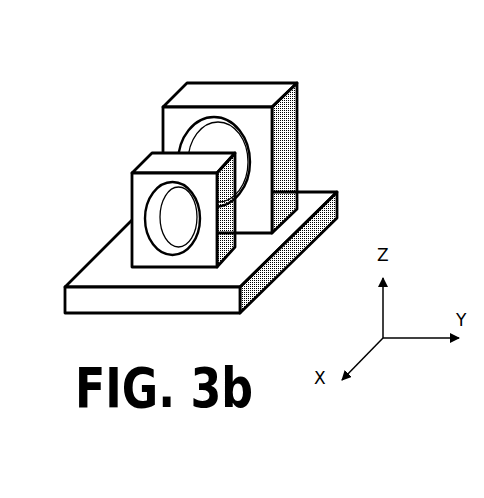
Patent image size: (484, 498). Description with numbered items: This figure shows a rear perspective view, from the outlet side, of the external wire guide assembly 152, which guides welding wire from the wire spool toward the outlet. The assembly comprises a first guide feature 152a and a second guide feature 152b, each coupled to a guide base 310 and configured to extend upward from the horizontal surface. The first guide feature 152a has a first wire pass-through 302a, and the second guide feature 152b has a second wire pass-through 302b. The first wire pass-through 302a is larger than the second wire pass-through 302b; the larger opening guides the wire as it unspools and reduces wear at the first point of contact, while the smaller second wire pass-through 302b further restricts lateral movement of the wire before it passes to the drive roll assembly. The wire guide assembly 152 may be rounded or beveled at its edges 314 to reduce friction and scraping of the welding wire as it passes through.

The wire guide assembly 152 is at (228, 136).
The first guide feature 152a is at (267, 82).
The second guide feature 152b is at (133, 172).
The first wire pass-through 302a is at (247, 160).
The second wire pass-through 302b is at (165, 227).
The guide base 310 is at (80, 272).
The edges 314 is at (146, 219).